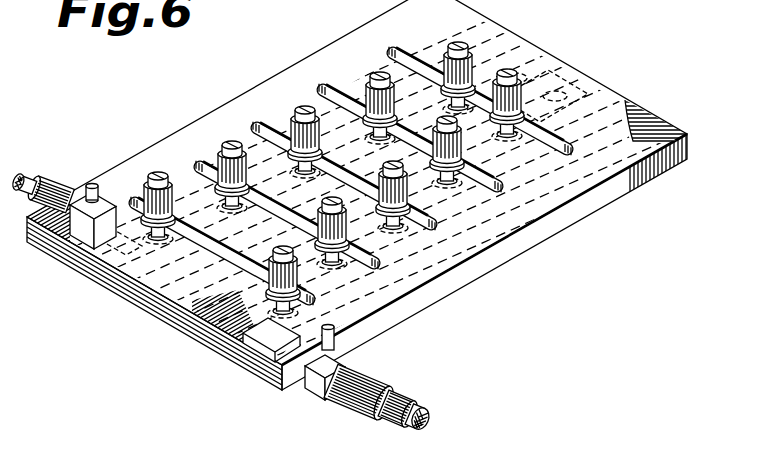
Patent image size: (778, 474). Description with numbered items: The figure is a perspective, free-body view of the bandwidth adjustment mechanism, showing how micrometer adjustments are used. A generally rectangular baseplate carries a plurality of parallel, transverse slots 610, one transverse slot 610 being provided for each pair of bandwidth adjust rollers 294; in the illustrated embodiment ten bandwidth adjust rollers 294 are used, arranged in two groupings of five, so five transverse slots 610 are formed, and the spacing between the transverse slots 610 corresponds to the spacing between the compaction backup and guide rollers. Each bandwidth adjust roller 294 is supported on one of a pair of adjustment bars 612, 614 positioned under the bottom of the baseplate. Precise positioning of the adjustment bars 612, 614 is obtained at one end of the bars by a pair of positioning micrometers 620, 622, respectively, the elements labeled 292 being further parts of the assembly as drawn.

The terminal post 292 is at (280, 124).
The bandwidth adjust roller 294 is at (152, 163).
The transverse slot 610 is at (262, 195).
The adjustment bar 612 is at (135, 268).
The adjustment bar 614 is at (233, 350).
The positioning micrometer 620 is at (50, 186).
The positioning micrometer 622 is at (368, 378).